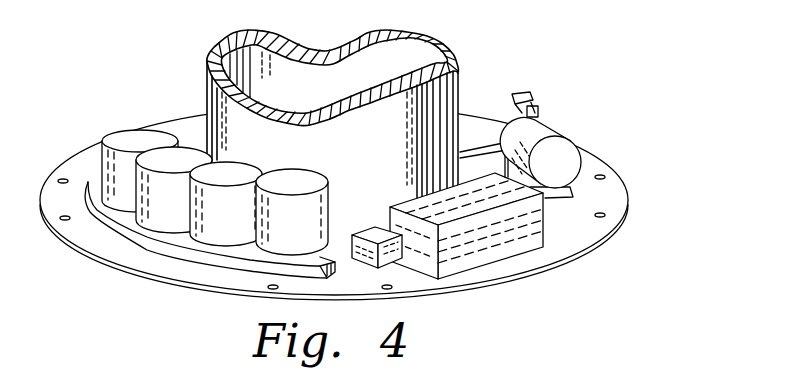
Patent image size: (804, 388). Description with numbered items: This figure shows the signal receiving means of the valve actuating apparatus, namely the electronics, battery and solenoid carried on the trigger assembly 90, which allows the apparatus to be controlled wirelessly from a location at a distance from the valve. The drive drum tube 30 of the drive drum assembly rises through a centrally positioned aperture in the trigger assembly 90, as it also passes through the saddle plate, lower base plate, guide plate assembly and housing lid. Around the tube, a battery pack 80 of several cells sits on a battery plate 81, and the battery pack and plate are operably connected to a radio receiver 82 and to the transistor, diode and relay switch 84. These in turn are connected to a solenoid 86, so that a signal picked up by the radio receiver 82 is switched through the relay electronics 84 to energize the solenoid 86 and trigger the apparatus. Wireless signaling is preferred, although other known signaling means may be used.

The drive drum tube 30 is at (464, 66).
The battery pack 80 is at (163, 220).
The battery plate 81 is at (210, 260).
The radio receiver 82 is at (383, 260).
The transistor, diode and relay switch 84 is at (507, 240).
The solenoid 86 is at (567, 137).
The trigger assembly 90 is at (575, 82).